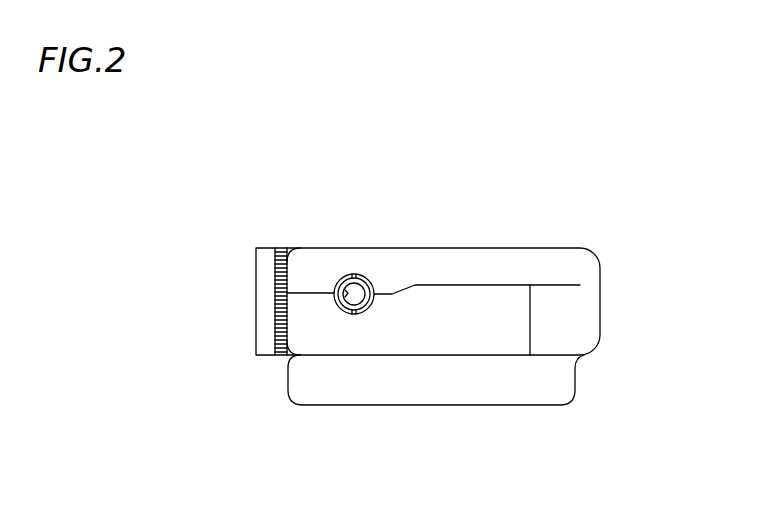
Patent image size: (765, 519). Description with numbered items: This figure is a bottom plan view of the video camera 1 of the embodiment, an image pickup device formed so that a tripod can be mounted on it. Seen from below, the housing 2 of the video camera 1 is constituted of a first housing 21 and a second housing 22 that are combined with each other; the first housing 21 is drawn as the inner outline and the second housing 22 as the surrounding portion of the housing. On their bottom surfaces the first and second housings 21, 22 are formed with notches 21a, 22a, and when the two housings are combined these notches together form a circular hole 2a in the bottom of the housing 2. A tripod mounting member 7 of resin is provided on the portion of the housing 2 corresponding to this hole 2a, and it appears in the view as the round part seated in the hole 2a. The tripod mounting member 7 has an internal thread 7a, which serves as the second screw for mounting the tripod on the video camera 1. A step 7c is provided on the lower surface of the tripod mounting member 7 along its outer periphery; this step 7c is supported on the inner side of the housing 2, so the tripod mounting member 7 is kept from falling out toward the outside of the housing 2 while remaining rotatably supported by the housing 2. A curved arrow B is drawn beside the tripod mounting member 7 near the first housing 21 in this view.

The video camera 1 is at (604, 232).
The housing 2 is at (563, 135).
The first housing 21 is at (508, 305).
The second housing 22 is at (545, 270).
The notch 21a is at (352, 315).
The notch 22a is at (355, 274).
The circular hole 2a is at (368, 284).
The tripod mounting member 7 is at (373, 302).
The internal thread 7a is at (334, 286).
The step 7c is at (378, 303).
The direction B is at (414, 290).